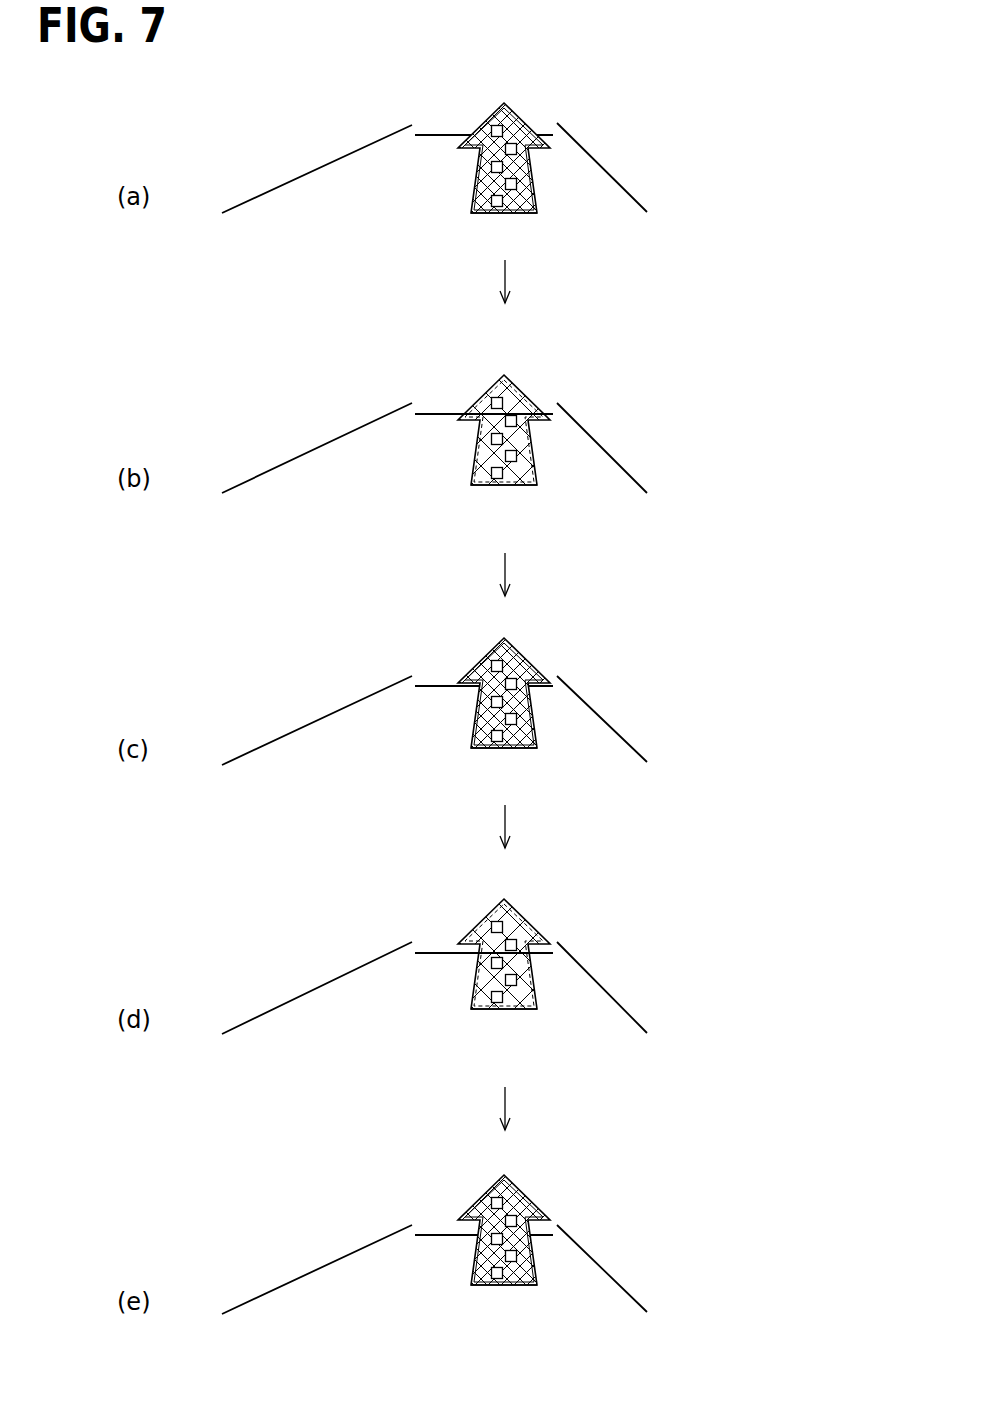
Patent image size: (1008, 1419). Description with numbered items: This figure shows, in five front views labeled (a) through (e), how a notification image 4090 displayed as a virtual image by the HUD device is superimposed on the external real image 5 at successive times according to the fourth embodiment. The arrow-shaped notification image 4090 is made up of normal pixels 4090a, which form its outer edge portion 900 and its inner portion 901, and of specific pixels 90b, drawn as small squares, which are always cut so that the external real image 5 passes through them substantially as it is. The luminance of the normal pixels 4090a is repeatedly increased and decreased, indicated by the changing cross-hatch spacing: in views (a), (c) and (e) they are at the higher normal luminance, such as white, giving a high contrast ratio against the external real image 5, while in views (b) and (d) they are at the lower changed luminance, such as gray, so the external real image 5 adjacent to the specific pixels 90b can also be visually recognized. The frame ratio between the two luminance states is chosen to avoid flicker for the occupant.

The external real image 5 is at (502, 100).
The specific pixels 90b is at (470, 200).
The outer edge portion 900 is at (467, 212).
The inner portion 901 is at (538, 206).
The notification image 4090 is at (525, 102).
The normal pixels 4090a is at (531, 122).